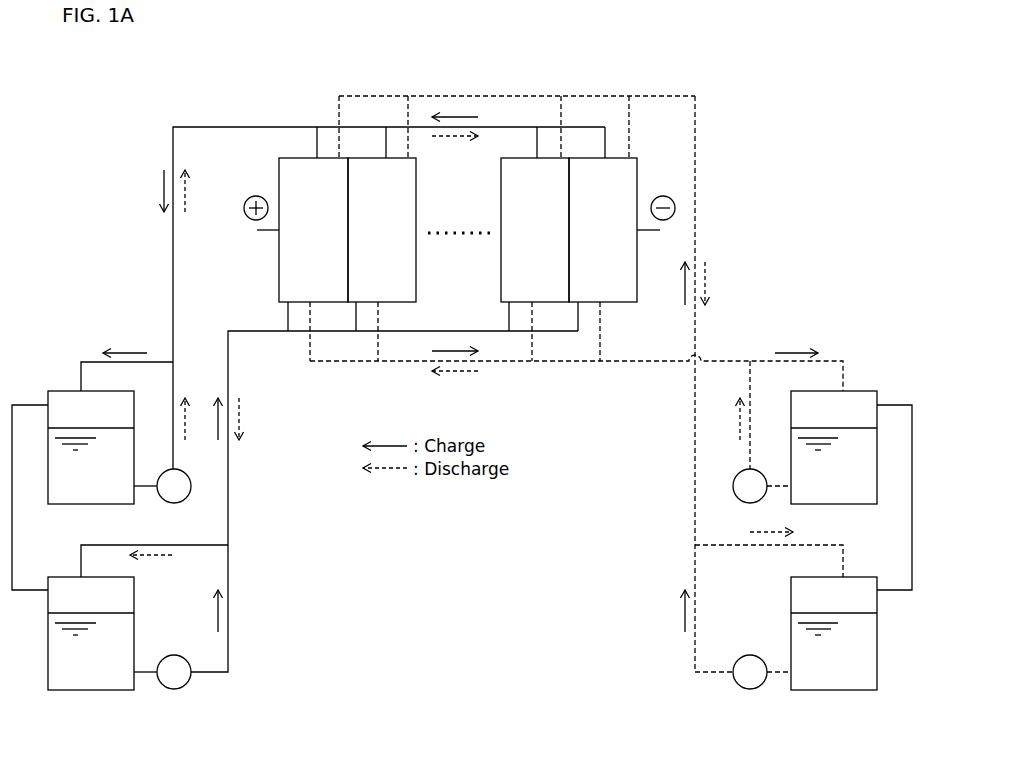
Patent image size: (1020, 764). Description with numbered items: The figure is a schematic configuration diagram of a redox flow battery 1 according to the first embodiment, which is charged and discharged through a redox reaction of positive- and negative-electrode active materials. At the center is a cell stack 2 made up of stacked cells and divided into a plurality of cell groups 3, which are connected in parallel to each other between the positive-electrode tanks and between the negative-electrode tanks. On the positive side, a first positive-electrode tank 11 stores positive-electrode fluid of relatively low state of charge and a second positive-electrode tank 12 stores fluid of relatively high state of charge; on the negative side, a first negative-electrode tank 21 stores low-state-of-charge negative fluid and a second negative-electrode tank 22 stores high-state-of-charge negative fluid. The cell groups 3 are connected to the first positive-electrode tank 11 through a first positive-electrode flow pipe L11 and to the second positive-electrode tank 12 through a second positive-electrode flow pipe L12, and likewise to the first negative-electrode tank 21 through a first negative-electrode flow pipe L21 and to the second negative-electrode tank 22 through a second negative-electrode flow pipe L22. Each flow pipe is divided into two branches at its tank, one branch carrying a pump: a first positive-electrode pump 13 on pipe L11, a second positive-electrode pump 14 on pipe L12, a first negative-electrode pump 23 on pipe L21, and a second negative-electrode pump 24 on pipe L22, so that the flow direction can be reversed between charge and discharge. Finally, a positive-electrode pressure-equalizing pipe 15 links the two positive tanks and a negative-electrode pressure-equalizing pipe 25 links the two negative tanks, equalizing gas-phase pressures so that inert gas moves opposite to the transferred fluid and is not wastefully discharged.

The redox flow battery 1 is at (773, 120).
The cell stack 2 is at (451, 234).
The cell group 3 is at (458, 230).
The first positive-electrode tank 11 is at (63, 692).
The second positive-electrode tank 12 is at (62, 507).
The first positive-electrode pump 13 is at (189, 685).
The second positive-electrode pump 14 is at (189, 499).
The positive-electrode pressure-equalizing pipe 15 is at (25, 404).
The first negative-electrode tank 21 is at (862, 692).
The second negative-electrode tank 22 is at (862, 507).
The first negative-electrode pump 23 is at (741, 686).
The second negative-electrode pump 24 is at (741, 500).
The negative-electrode pressure-equalizing pipe 25 is at (900, 404).
The first positive-electrode flow pipe L11 is at (229, 484).
The second positive-electrode flow pipe L12 is at (222, 127).
The first negative-electrode flow pipe L21 is at (693, 485).
The second negative-electrode flow pipe L22 is at (628, 362).